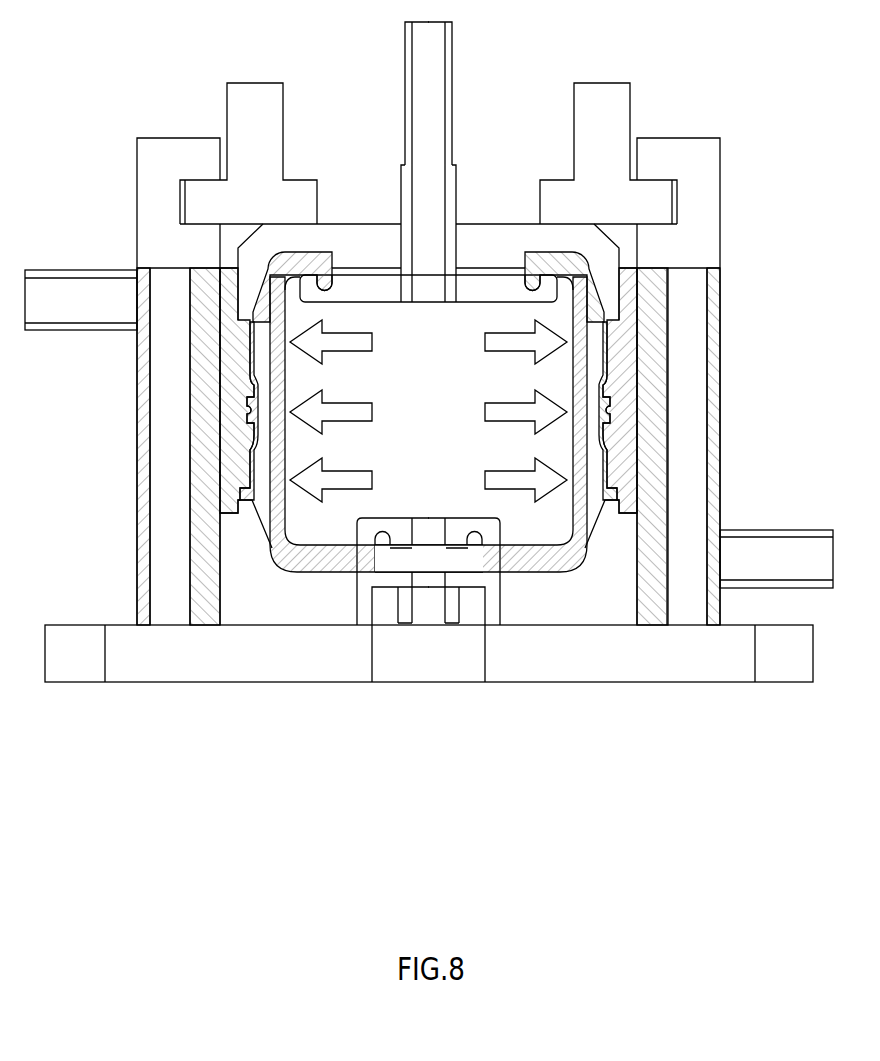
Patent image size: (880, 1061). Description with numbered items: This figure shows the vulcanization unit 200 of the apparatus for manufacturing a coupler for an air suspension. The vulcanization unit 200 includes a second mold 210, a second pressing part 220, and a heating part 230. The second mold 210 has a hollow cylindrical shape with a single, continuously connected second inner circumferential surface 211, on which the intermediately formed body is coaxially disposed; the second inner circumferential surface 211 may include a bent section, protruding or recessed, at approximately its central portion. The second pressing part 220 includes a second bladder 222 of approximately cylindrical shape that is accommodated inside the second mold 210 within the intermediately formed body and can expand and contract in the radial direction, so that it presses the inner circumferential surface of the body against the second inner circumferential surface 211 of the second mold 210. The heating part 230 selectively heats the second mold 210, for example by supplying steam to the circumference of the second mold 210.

The vulcanization unit 200 is at (151, 117).
The second mold 210 is at (625, 435).
The second inner circumferential surface 211 is at (601, 461).
The second pressing part 220 is at (532, 243).
The second bladder 222 is at (560, 262).
The heating part 230 is at (652, 613).